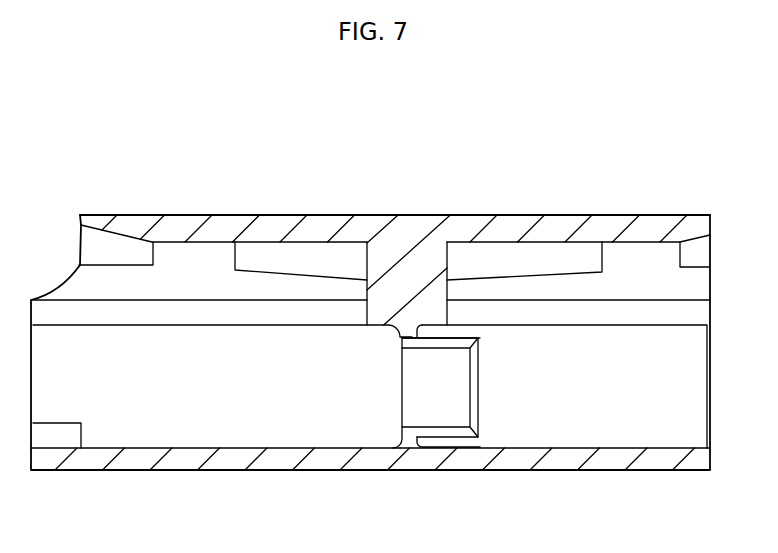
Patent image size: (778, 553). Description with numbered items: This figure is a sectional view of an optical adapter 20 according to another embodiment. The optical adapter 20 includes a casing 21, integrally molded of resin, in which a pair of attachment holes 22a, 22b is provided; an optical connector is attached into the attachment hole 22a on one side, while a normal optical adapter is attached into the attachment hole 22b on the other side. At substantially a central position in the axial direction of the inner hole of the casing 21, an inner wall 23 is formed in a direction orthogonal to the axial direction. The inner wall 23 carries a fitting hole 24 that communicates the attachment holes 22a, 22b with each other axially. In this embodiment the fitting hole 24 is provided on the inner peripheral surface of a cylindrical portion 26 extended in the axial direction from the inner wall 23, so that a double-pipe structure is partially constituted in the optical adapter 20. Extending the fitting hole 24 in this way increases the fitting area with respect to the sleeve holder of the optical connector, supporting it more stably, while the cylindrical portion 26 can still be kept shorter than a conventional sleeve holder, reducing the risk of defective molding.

The optical adapter 20 is at (543, 190).
The casing 21 is at (279, 226).
The inner wall 23 is at (387, 322).
The attachment hole 22a is at (585, 448).
The attachment hole 22b is at (253, 448).
The fitting hole 24 is at (420, 422).
The cylindrical portion 26 is at (446, 437).